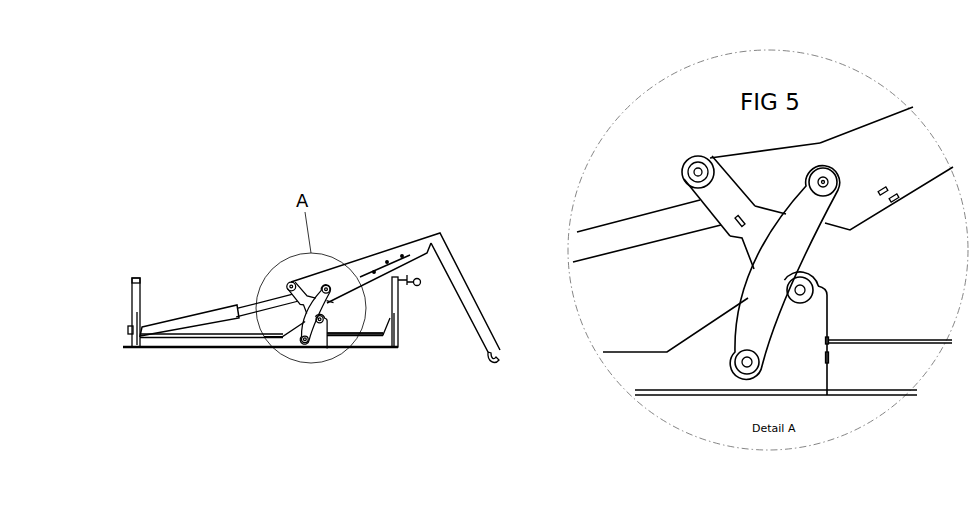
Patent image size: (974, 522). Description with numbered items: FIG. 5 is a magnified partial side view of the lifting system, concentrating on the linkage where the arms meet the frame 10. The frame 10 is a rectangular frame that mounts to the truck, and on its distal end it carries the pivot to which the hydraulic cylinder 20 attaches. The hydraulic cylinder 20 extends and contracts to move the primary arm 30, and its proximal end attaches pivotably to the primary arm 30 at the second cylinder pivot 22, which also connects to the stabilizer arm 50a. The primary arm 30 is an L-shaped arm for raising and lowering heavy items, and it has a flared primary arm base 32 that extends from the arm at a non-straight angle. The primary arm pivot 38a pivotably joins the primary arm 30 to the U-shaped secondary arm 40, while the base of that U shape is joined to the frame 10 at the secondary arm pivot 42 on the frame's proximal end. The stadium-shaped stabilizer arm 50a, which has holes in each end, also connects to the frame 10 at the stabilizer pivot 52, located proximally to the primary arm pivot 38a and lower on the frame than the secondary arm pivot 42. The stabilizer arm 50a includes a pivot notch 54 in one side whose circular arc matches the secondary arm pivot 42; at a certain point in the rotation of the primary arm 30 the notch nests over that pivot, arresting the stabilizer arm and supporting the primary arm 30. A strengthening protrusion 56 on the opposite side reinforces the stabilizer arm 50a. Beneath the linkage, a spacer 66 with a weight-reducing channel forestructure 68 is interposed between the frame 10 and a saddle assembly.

The frame 10 is at (620, 371).
The hydraulic cylinder 20 is at (580, 245).
The second cylinder pivot 22 is at (837, 181).
The primary arm 30 is at (923, 138).
The primary arm base 32 is at (733, 150).
The primary arm pivot 38a is at (689, 176).
The secondary arm 40 is at (738, 237).
The secondary arm pivot 42 is at (815, 291).
The stabilizer arm 50a is at (762, 325).
The stabilizer pivot 52 is at (735, 363).
The pivot notch 54 is at (792, 275).
The strengthening protrusion 56 is at (750, 277).
The spacer 66 is at (890, 398).
The channel forestructure 68 is at (910, 369).